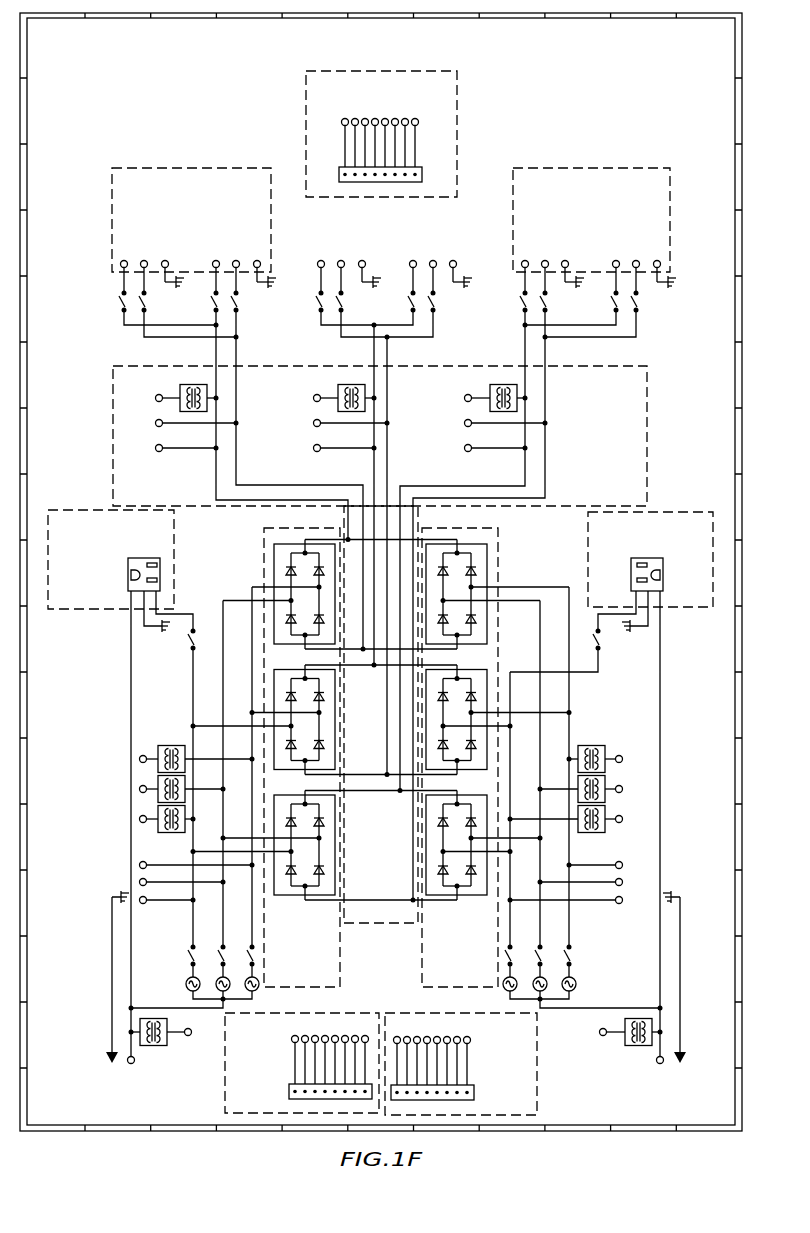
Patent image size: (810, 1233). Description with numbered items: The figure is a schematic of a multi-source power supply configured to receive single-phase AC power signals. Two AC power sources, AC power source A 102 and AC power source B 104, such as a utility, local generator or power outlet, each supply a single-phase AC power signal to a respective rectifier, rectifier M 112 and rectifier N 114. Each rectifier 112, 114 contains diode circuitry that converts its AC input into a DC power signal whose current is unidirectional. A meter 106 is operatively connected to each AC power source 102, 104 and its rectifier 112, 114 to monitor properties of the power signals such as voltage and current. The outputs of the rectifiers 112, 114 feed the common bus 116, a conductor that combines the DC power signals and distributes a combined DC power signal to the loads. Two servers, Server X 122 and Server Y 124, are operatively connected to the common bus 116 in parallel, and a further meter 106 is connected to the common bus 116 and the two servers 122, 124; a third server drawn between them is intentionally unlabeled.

The meter 106 is at (425, 96).
The server X 122 is at (248, 211).
The server Y 124 is at (650, 211).
The common bus 116 is at (637, 451).
The AC power source A 102 is at (100, 581).
The AC power source B 104 is at (706, 581).
The rectifier M 112 is at (329, 980).
The rectifier N 114 is at (486, 980).